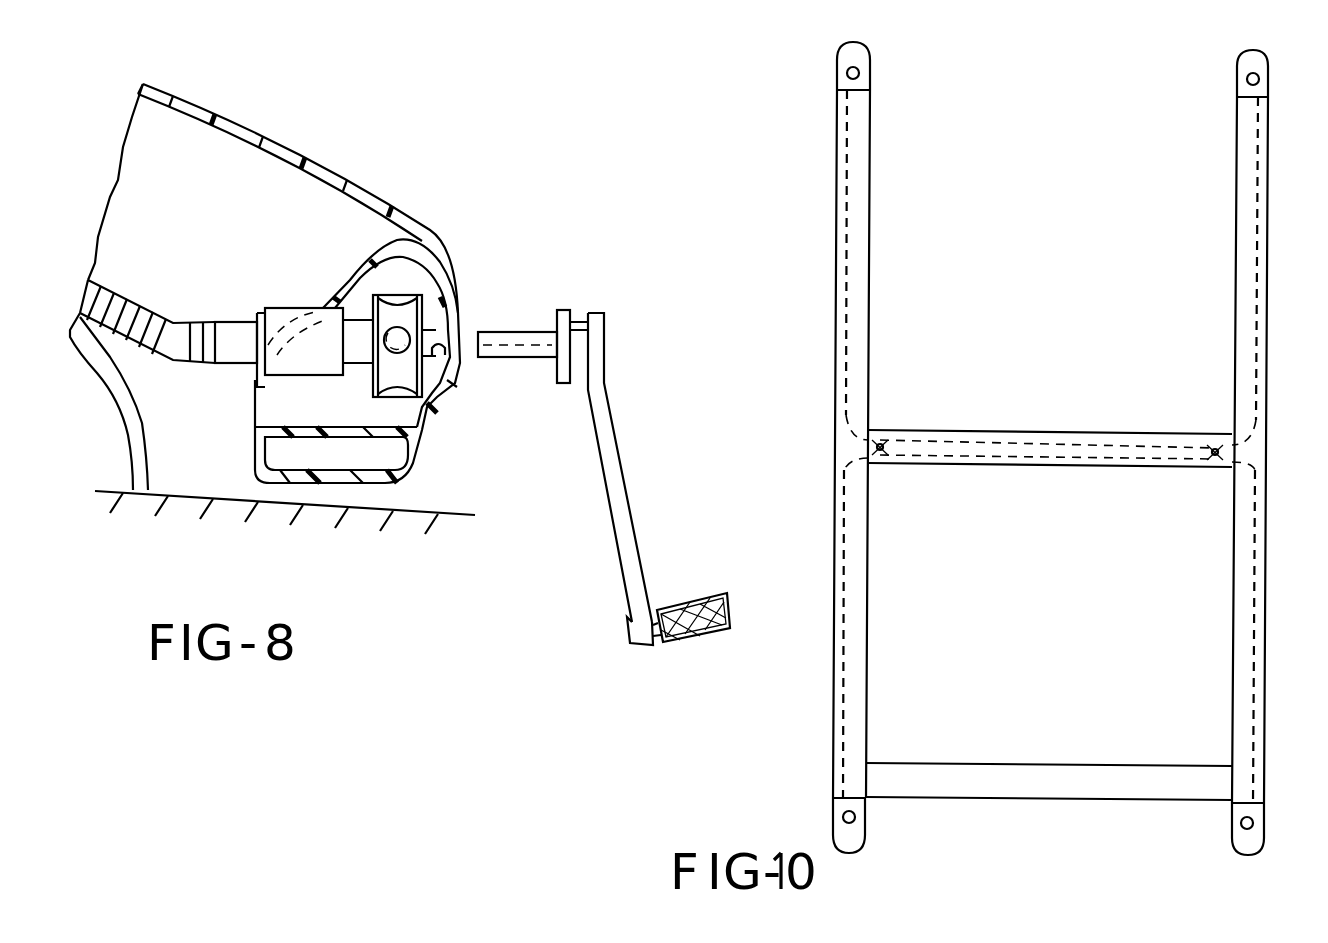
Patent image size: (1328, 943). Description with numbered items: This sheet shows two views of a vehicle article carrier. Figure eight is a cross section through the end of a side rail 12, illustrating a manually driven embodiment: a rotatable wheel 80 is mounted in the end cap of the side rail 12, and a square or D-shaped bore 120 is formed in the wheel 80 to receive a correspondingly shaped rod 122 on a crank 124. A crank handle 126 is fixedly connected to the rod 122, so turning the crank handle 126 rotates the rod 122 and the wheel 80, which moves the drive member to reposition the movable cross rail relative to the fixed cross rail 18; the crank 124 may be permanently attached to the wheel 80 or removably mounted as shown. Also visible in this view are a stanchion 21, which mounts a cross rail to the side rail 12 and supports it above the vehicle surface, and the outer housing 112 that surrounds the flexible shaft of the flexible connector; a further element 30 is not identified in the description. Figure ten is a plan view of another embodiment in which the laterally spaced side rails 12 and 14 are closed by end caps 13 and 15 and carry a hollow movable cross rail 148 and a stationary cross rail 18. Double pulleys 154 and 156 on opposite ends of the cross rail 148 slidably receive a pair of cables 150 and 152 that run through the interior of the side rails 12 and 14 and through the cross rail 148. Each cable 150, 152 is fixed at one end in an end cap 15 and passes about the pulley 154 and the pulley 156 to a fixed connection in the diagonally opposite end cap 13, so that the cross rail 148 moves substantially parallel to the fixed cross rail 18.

In FIG. 8, the stanchion 21 is at (220, 104).
In FIG. 8, the outer housing 112 is at (127, 307).
In FIG. 8, the floor 30 is at (345, 487).
In FIG. 8, the side rail 12 is at (452, 272).
In FIG. 10, the side rail 12 is at (872, 605).
In FIG. 8, the rotatable wheel 80 is at (437, 303).
In FIG. 8, the bore 120 is at (447, 347).
In FIG. 8, the rod 122 is at (507, 337).
In FIG. 8, the crank 124 is at (598, 468).
In FIG. 8, the crank handle 126 is at (627, 562).
In FIG. 10, the side rail 14 is at (1226, 600).
In FIG. 10, the end cap 15 is at (870, 60).
In FIG. 10, the end cap 13 is at (863, 828).
In FIG. 10, the cable 150 is at (846, 220).
In FIG. 10, the cable 152 is at (1245, 258).
In FIG. 10, the movable cross rail 148 is at (1033, 433).
In FIG. 10, the double pulley 154 is at (882, 440).
In FIG. 10, the double pulley 156 is at (1210, 437).
In FIG. 10, the fixed cross rail 18 is at (995, 765).